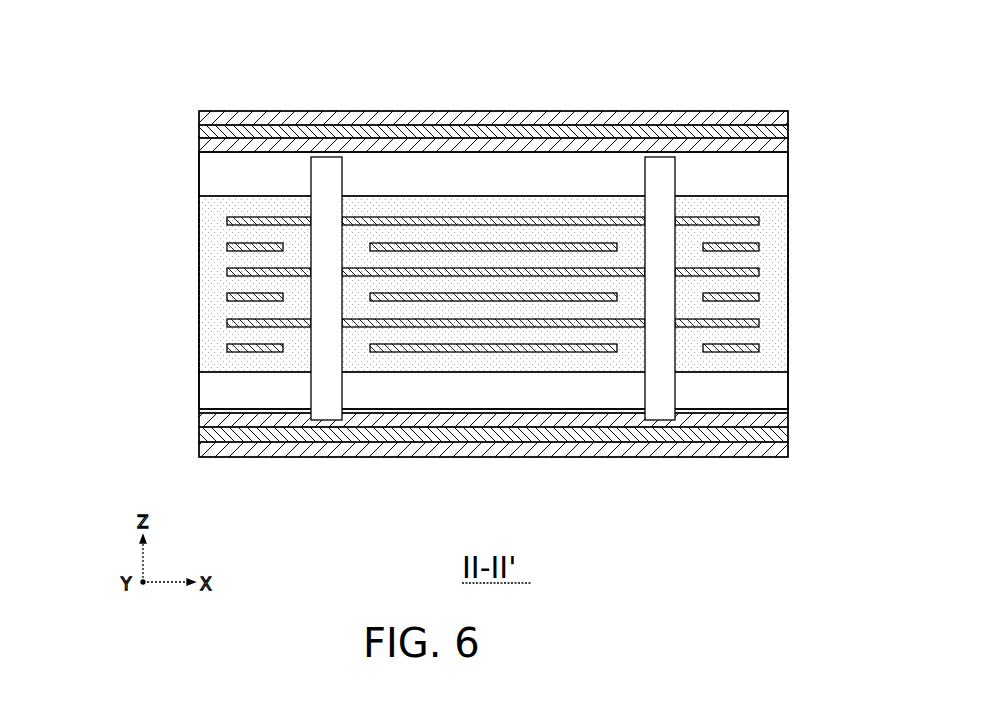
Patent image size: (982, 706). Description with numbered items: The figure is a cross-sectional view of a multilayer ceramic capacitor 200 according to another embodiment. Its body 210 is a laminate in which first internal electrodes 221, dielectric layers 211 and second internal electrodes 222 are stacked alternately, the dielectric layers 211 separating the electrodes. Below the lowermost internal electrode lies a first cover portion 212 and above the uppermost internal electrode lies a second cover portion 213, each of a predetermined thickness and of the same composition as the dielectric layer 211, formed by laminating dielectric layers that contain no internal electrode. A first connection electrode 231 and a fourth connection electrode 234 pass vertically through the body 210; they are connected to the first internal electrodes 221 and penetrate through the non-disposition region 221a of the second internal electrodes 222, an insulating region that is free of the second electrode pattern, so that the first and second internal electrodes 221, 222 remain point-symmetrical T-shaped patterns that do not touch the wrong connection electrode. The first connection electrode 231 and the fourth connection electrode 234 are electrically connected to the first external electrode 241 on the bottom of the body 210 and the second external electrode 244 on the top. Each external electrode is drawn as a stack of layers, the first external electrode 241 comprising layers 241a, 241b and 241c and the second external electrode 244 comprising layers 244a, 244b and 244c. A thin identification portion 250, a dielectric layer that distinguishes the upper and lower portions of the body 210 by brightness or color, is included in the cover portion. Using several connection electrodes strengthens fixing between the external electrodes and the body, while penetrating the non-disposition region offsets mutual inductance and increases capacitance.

The multilayer ceramic capacitor 200 is at (340, 37).
The body 210 is at (472, 413).
The dielectric layer 211 is at (765, 312).
The first cover portion 212 is at (780, 388).
The second cover portion 213 is at (783, 172).
The first internal electrode 221 is at (225, 323).
The non-disposition region 221a is at (297, 345).
The second internal electrode 222 is at (762, 348).
The first connection electrode 231 is at (330, 160).
The fourth connection electrode 234 is at (660, 160).
The first external electrode 241 is at (110, 400).
The lower first electrode layer 241a is at (199, 422).
The lower second electrode layer 241b is at (199, 442).
The lower third electrode layer 241c is at (199, 456).
The second external electrode 244 is at (110, 92).
The upper first electrode layer 244a is at (199, 145).
The upper second electrode layer 244b is at (199, 131).
The upper third electrode layer 244c is at (199, 117).
The identification portion 250 is at (407, 417).